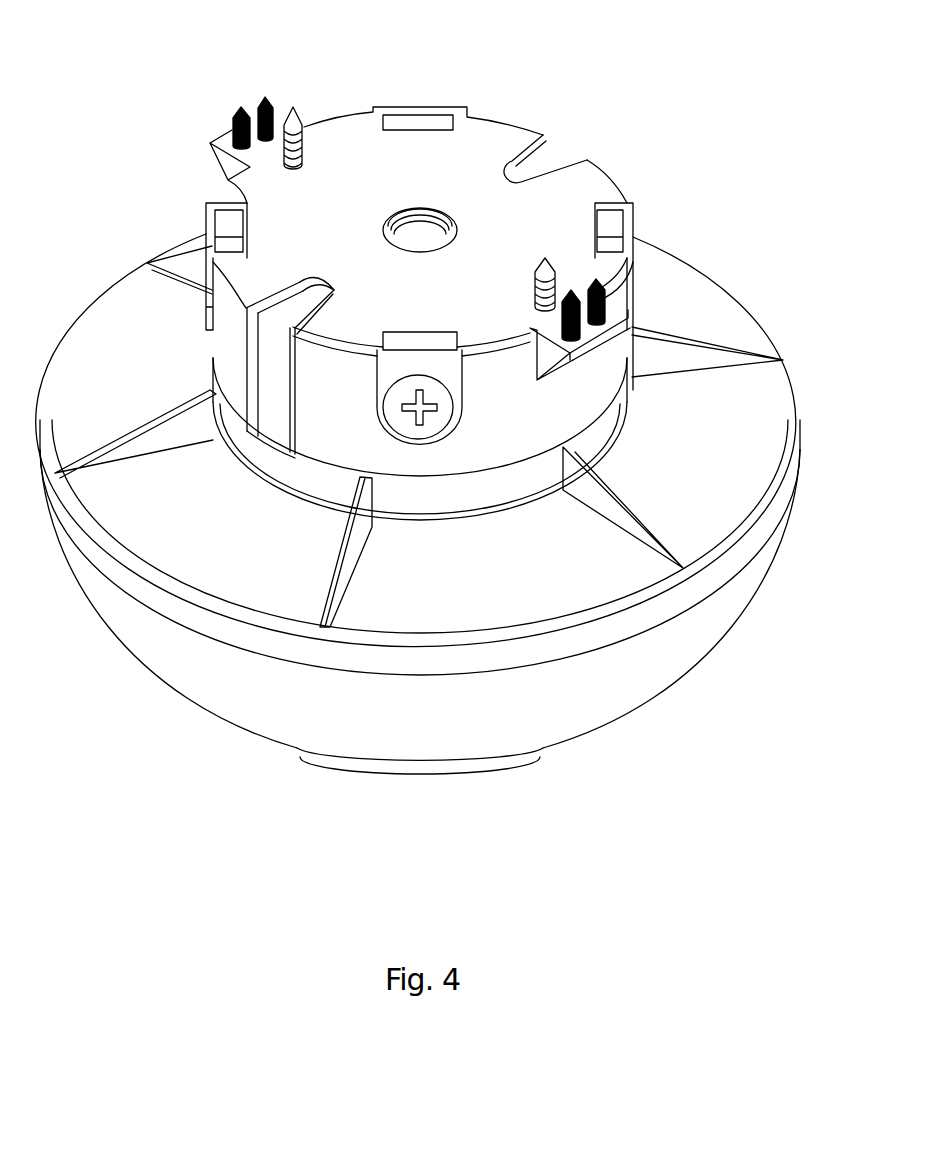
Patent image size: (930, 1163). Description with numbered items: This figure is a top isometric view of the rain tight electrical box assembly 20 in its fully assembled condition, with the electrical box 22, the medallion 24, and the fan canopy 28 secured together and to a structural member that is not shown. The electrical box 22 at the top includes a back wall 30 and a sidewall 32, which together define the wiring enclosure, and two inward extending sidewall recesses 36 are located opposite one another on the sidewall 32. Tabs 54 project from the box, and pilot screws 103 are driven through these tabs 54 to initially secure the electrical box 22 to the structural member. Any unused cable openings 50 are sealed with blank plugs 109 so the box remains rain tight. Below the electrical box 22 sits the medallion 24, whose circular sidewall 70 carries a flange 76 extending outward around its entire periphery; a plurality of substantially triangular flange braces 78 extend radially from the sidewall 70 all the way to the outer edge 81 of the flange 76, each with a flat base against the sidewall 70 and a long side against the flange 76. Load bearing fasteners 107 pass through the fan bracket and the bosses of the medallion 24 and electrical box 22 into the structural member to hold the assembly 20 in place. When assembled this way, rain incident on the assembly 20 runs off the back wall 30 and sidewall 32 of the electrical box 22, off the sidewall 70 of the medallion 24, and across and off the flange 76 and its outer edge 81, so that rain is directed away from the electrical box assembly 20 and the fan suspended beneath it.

The rain tight electrical box assembly 20 is at (100, 168).
The electrical box 22 is at (607, 178).
The medallion 24 is at (610, 430).
The fan canopy 28 is at (667, 655).
The back wall 30 is at (324, 225).
The sidewall 32 is at (344, 412).
The sidewall recesses 36 is at (275, 366).
The cable openings 50 is at (418, 240).
The tabs 54 is at (550, 362).
The sidewall 70 is at (481, 502).
The flange 76 is at (498, 585).
The flange braces 78 is at (695, 338).
The outer edge 81 is at (568, 622).
The pilot screws 103 is at (265, 100).
The load bearing fasteners 107 is at (296, 118).
The blank plugs 109 is at (444, 422).